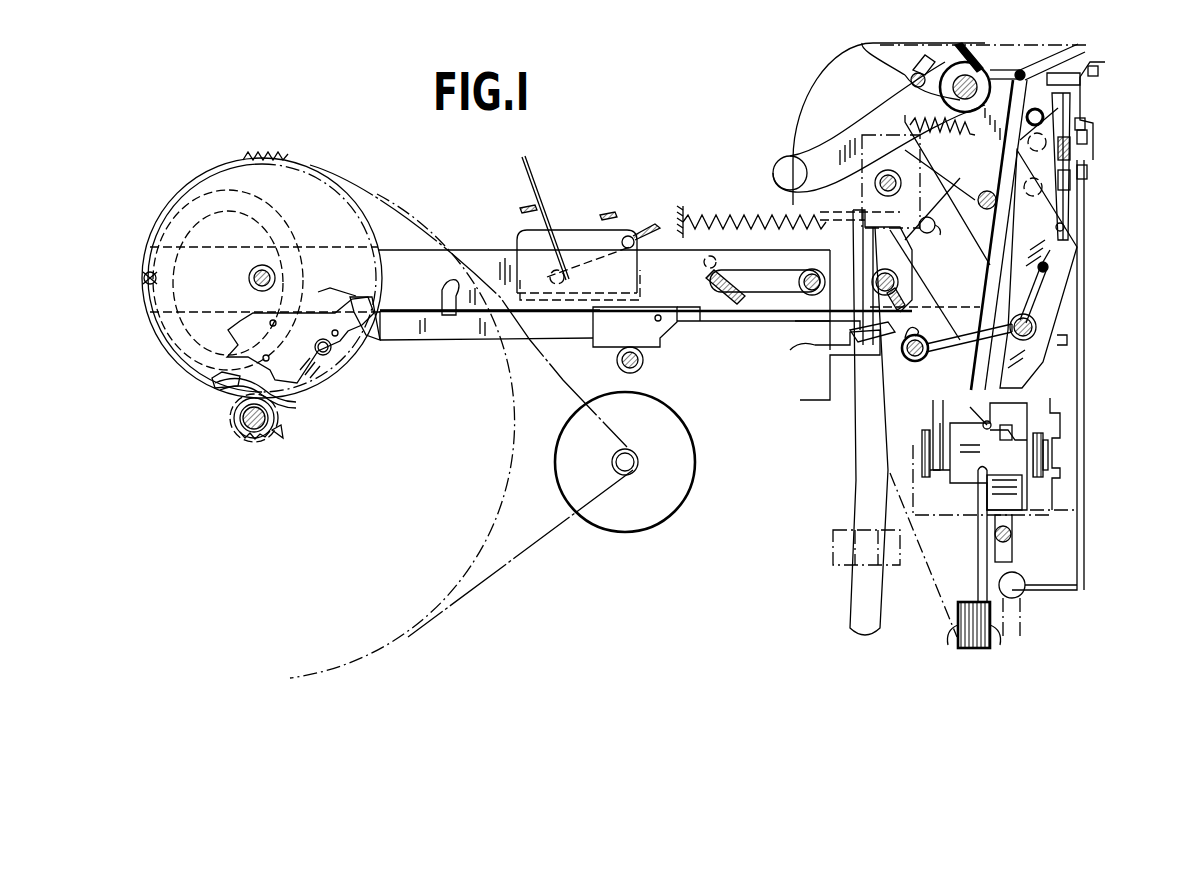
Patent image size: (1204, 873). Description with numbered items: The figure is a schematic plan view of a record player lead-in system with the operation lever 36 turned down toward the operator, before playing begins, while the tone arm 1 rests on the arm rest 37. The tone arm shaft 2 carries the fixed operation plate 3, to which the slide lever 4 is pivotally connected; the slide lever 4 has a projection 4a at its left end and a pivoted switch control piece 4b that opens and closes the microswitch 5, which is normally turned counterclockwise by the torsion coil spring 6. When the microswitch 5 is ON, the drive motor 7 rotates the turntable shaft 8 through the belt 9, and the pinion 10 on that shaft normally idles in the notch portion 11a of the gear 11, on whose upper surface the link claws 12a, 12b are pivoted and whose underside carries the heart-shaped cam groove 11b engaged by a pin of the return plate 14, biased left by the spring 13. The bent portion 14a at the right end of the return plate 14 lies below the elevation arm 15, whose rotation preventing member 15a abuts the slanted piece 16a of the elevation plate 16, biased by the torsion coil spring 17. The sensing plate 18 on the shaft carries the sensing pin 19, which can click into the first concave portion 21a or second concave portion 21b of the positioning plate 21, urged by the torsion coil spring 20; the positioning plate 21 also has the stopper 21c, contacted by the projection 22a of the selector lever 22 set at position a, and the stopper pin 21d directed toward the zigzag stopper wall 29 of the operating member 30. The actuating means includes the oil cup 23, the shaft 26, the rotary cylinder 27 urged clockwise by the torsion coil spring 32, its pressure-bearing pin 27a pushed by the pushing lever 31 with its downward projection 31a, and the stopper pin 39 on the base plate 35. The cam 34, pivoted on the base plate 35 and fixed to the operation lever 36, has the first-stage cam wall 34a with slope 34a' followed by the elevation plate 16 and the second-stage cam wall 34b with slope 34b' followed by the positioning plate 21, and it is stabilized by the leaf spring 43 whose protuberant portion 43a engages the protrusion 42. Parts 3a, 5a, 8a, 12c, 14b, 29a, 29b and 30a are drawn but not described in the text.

The tone arm 1 is at (843, 623).
The tone arm shaft 2 is at (820, 118).
The operation plate 3 is at (922, 182).
The spring pin 3a is at (934, 236).
The slide lever 4 is at (573, 333).
The projection 4a is at (443, 282).
The switch control piece 4b is at (643, 337).
The microswitch 5 is at (580, 240).
The bracket arm 5a is at (680, 330).
The torsion coil spring 6 is at (537, 173).
The drive motor 7 is at (688, 482).
The turntable shaft 8 is at (267, 435).
The ratchet tooth 8a is at (287, 430).
The belt 9 is at (542, 537).
The pinion 10 is at (240, 432).
The gear 11 is at (337, 195).
The notch portion 11a is at (277, 408).
The heart-shaped cam groove 11b is at (205, 200).
The link claw 12a is at (322, 356).
The link claw 12b is at (360, 337).
The cam pawl 12c is at (213, 383).
The spring 13 is at (698, 218).
The return plate 14 is at (487, 260).
The bent portion 14a is at (787, 327).
The arm pivot 14b is at (790, 200).
The elevation arm 15 is at (800, 343).
The rotation preventing member 15a is at (853, 327).
The elevation plate 16 is at (890, 400).
The slanted piece 16a is at (905, 352).
The torsion coil spring 17 is at (900, 395).
The sensing plate 18 is at (1068, 222).
The sensing pin 19 is at (1080, 137).
The torsion coil spring 20 is at (1040, 290).
The positioning plate 21 is at (1036, 323).
The first concave portion 21a is at (1083, 153).
The second concave portion 21b is at (1047, 197).
The stopper 21c is at (1077, 197).
The stopper pin 21d is at (1045, 115).
The selector lever 22 is at (1087, 352).
The projection 22a is at (1085, 173).
The oil cup 23 is at (1008, 77).
The shaft 26 is at (953, 92).
The rotary cylinder 27 is at (1020, 68).
The pressure-bearing pin 27a is at (1030, 62).
The zigzag stopper wall 29 is at (1093, 93).
The frame plate lug 29a is at (1087, 53).
The frame plate lug 29b is at (1097, 68).
The operating member 30 is at (1080, 127).
The roller 30a is at (922, 63).
The pushing lever 31 is at (1077, 47).
The projection 31a is at (927, 465).
The torsion coil spring 32 is at (978, 63).
The cam 34 is at (1007, 462).
The cam wall 34a is at (954, 535).
The slope 34a' is at (1039, 421).
The cam wall 34b is at (1071, 419).
The slope 34b' is at (1090, 451).
The base plate 35 is at (840, 85).
The operation lever 36 is at (958, 620).
The arm rest 37 is at (833, 557).
The stopper pin 39 is at (910, 70).
The protrusion 42 is at (1020, 503).
The leaf spring 43 is at (1003, 555).
The protuberant portion 43a is at (1013, 527).
The predetermined position a is at (1017, 590).